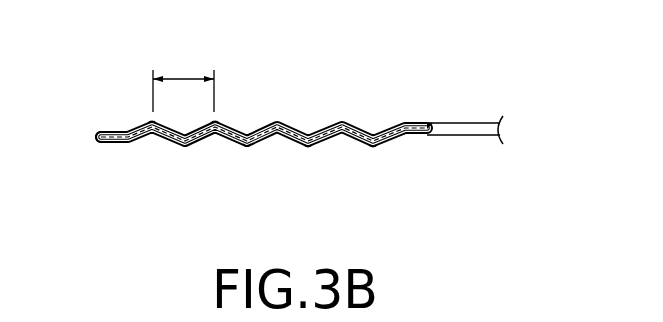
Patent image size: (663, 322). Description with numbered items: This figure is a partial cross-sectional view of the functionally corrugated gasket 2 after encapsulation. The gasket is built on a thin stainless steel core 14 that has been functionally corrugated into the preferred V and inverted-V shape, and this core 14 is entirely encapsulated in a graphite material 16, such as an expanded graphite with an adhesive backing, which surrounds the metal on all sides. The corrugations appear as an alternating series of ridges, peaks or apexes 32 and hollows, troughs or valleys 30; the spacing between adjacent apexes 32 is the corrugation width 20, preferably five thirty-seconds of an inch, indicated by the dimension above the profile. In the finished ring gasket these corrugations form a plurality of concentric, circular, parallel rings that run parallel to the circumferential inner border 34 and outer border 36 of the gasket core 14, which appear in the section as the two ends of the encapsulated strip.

The functionally corrugated gasket 2 is at (310, 113).
The core 14 is at (426, 122).
The graphite material 16 is at (107, 131).
The corrugation width 20 is at (184, 78).
The hollows, troughs or valleys 30 is at (213, 134).
The ridges, peaks or apexes 32 is at (370, 147).
The inner border 34 is at (432, 134).
The outer border 36 is at (100, 143).